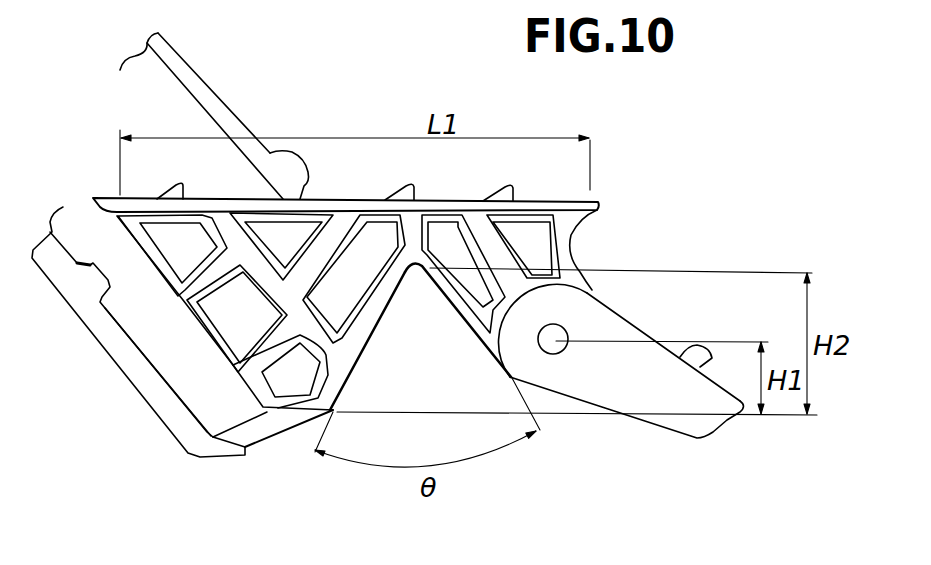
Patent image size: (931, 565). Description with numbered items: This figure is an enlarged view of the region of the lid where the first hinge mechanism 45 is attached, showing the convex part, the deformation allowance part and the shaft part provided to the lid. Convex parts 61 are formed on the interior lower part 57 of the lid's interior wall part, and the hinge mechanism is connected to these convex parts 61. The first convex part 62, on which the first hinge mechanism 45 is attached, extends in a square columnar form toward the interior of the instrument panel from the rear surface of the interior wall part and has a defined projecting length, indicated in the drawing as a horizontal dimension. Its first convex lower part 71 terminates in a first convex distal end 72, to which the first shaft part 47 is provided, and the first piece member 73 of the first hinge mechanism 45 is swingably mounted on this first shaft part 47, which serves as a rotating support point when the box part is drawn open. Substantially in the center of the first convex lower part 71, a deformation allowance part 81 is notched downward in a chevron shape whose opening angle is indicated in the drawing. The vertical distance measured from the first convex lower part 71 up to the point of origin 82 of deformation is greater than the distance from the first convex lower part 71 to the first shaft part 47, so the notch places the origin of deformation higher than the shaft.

The first hinge mechanism 45 is at (637, 333).
The first shaft part 47 is at (558, 352).
The interior lower part 57 is at (183, 360).
The convex part 61 is at (265, 116).
The first convex part 62 is at (337, 198).
The first convex lower part 71 is at (290, 409).
The first convex distal end 72 is at (590, 287).
The first piece member 73 is at (641, 390).
The deformation allowance part 81 is at (365, 360).
The point of origin of deformation 82 is at (413, 248).